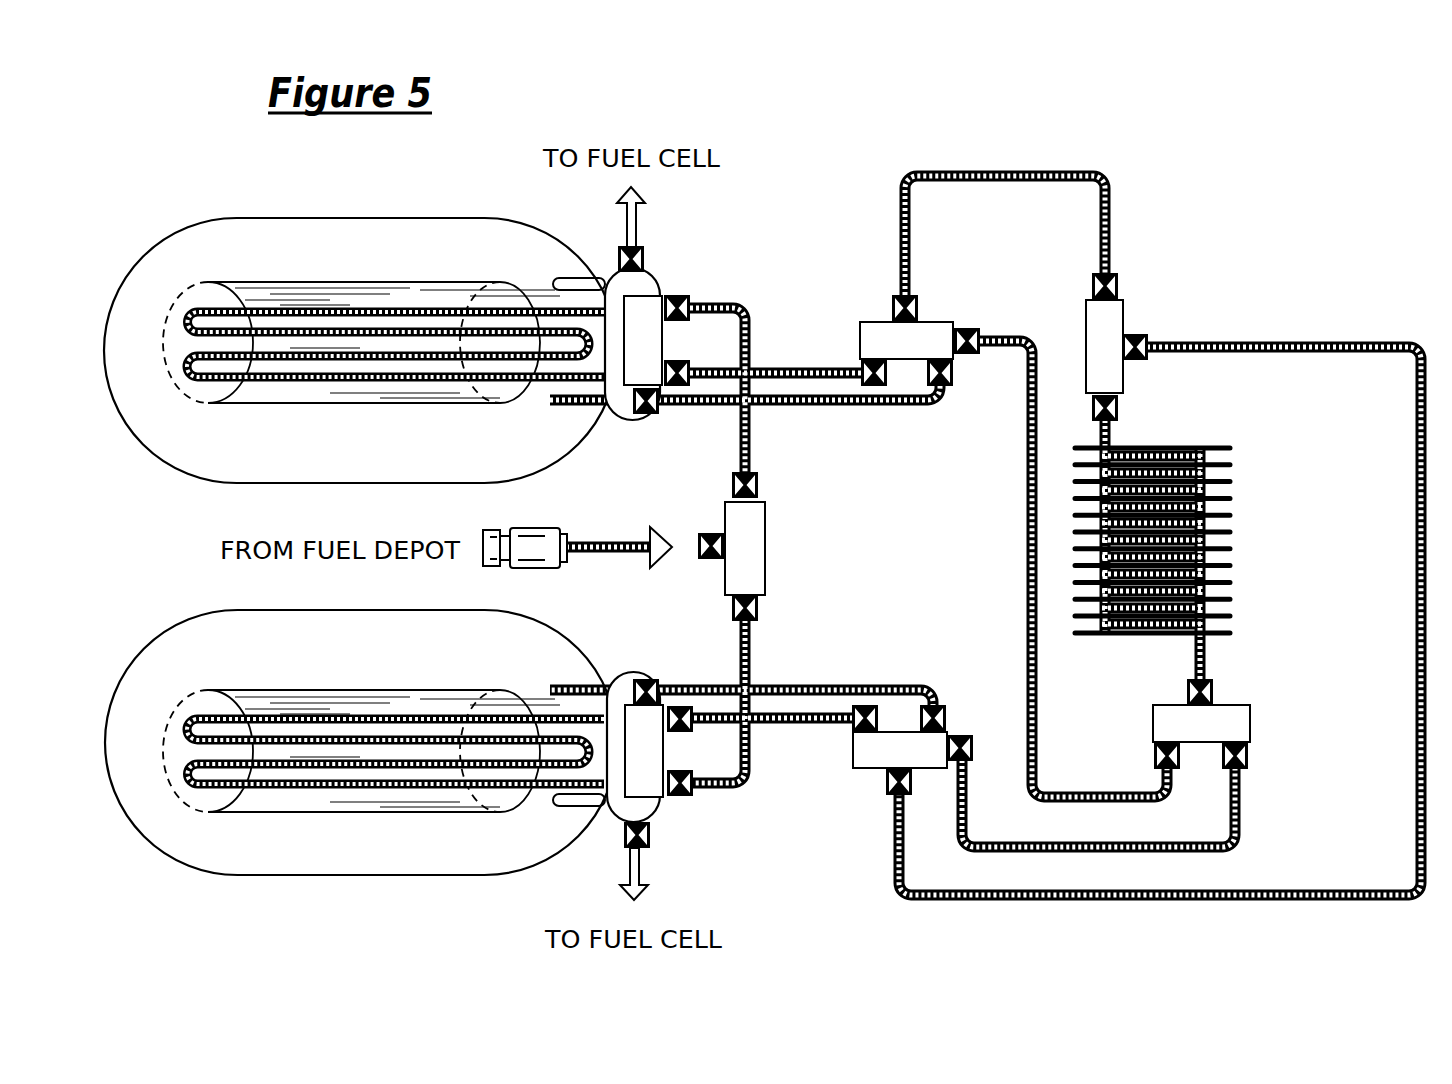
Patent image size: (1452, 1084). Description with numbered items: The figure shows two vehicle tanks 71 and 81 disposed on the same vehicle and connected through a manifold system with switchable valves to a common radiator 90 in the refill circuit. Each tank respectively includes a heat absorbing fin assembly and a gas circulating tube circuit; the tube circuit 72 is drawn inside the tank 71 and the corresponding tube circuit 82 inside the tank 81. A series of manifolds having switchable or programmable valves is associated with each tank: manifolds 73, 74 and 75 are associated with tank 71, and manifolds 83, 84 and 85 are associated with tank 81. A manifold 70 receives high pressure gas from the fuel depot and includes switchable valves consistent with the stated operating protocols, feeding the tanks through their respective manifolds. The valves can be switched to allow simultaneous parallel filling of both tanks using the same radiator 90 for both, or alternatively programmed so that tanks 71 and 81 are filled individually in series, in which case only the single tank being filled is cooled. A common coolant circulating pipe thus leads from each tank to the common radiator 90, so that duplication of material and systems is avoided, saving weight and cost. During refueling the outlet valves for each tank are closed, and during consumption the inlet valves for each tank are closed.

The manifold 70 is at (767, 547).
The tank 71 is at (205, 487).
The hydride bed with heat exchange tubes 72 is at (348, 403).
The manifold 73 is at (657, 282).
The manifold 74 is at (942, 321).
The manifold 75 is at (1125, 305).
The tank 81 is at (228, 862).
The hydride bed with heat exchange tubes 82 is at (438, 687).
The manifold 83 is at (660, 807).
The manifold 84 is at (852, 765).
The manifold 85 is at (1252, 713).
The radiator 90 is at (1230, 530).